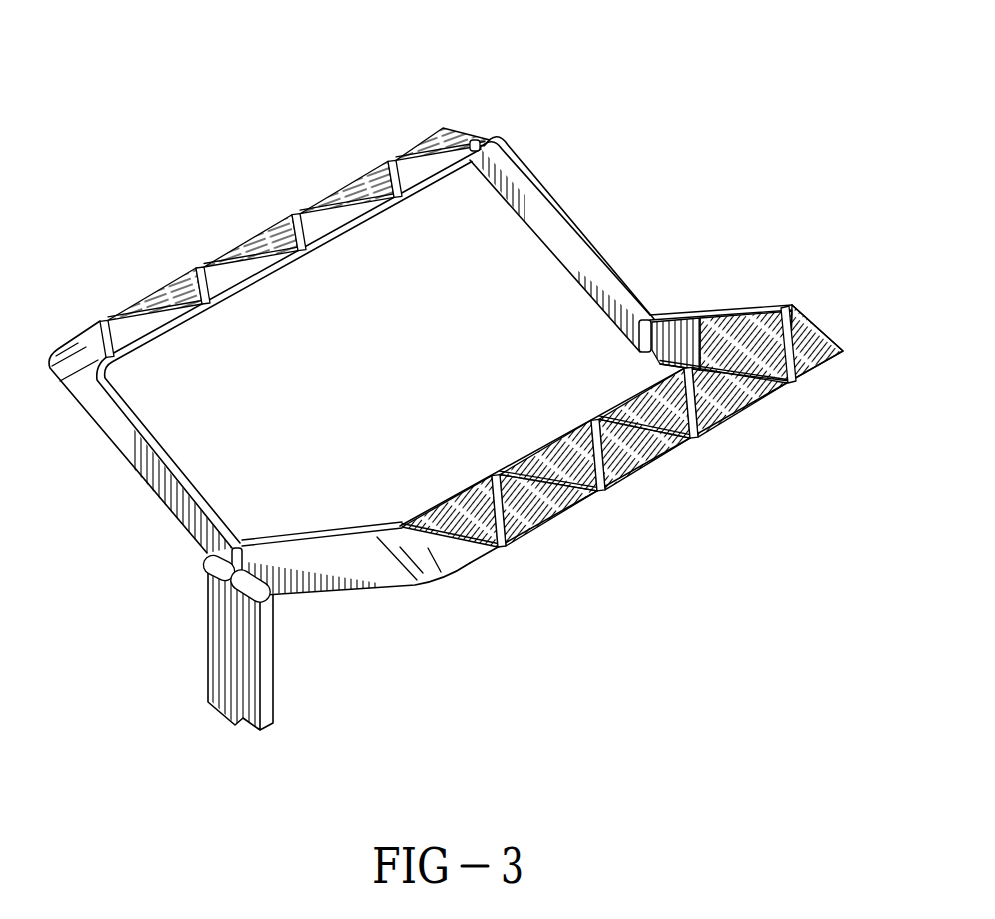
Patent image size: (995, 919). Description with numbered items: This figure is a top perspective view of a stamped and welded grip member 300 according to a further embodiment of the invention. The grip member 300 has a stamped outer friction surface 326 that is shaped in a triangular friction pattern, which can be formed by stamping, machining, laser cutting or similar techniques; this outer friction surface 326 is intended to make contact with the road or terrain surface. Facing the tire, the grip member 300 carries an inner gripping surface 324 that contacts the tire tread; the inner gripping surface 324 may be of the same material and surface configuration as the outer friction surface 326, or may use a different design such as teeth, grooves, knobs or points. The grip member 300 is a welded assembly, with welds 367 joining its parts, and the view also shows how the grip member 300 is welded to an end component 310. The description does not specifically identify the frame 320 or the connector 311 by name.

The grip member 300 is at (446, 307).
The end component 310 is at (240, 642).
The connector 311 is at (240, 582).
The frame 320 is at (297, 526).
The inner gripping surface 324 is at (340, 245).
The outer friction surface 326 is at (380, 182).
The welds 367 is at (643, 334).